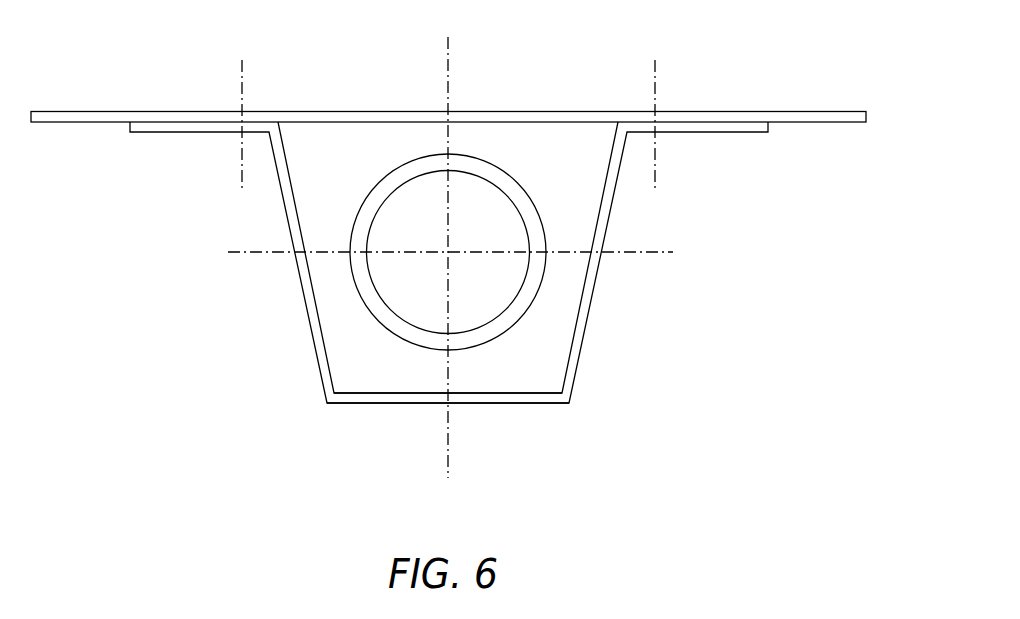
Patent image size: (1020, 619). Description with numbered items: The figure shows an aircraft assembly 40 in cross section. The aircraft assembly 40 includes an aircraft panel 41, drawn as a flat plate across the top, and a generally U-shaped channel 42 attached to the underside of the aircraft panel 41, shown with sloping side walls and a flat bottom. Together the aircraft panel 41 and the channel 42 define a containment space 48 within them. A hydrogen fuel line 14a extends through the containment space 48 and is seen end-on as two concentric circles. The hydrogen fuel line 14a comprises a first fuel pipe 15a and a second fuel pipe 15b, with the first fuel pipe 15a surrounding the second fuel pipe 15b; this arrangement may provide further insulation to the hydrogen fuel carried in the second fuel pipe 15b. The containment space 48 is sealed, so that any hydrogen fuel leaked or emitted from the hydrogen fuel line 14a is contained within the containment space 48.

The aircraft assembly 40 is at (242, 381).
The aircraft panel 41 is at (563, 110).
The channel 42 is at (538, 397).
The containment space 48 is at (390, 379).
The hydrogen fuel line 14a is at (553, 290).
The first fuel pipe 15a is at (546, 233).
The second fuel pipe 15b is at (367, 240).